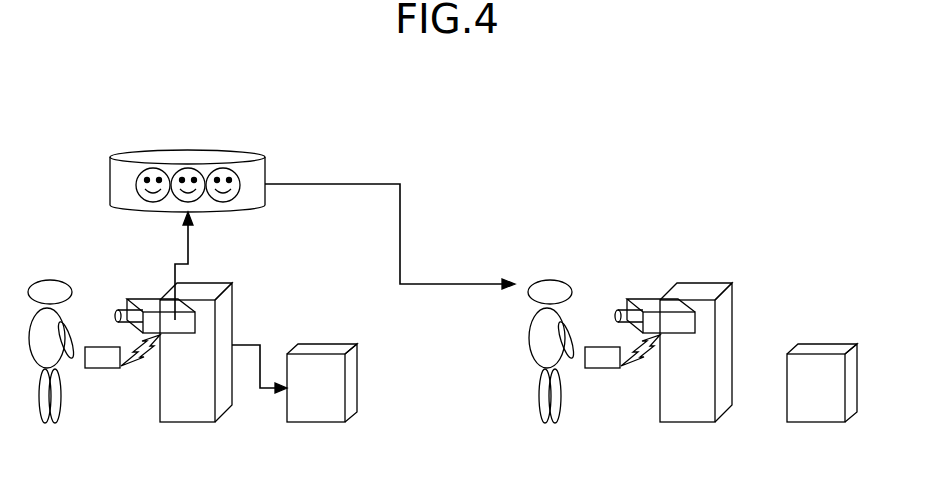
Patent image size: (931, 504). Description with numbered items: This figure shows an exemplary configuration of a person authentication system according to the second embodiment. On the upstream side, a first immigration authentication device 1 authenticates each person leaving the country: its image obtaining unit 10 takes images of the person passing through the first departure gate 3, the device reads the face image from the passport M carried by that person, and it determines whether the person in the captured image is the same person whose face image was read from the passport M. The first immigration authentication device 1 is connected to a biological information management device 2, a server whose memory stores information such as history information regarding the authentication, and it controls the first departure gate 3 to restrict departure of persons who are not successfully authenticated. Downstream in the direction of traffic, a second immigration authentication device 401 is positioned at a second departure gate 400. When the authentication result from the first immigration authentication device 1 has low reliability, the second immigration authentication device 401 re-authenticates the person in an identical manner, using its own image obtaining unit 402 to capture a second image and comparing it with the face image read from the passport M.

The first immigration authentication device 1 is at (210, 429).
The biological information management device 2 is at (190, 149).
The first departure gate 3 is at (315, 423).
The image obtaining unit 10 is at (145, 296).
The passport M is at (103, 369).
The second departure gate 400 is at (822, 407).
The second immigration authentication device 401 is at (696, 376).
The image obtaining unit 402 is at (655, 294).